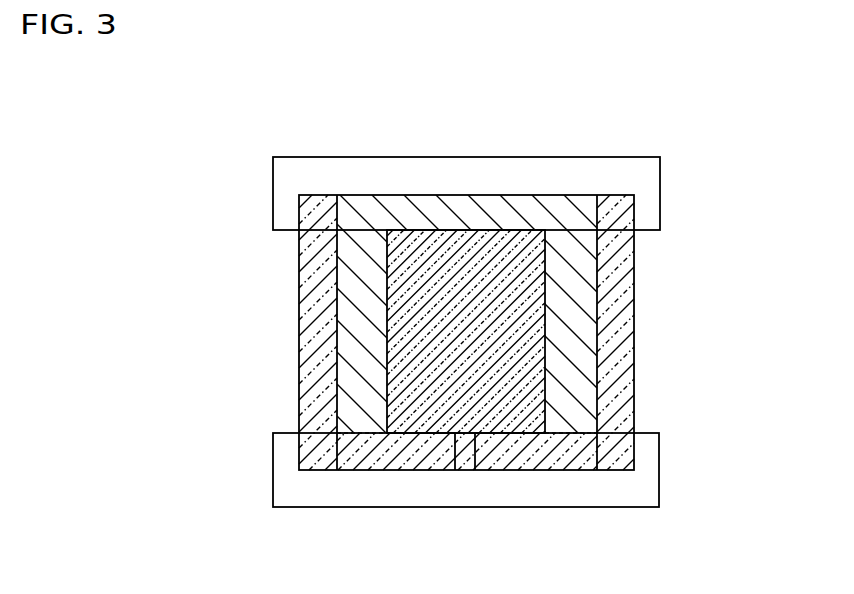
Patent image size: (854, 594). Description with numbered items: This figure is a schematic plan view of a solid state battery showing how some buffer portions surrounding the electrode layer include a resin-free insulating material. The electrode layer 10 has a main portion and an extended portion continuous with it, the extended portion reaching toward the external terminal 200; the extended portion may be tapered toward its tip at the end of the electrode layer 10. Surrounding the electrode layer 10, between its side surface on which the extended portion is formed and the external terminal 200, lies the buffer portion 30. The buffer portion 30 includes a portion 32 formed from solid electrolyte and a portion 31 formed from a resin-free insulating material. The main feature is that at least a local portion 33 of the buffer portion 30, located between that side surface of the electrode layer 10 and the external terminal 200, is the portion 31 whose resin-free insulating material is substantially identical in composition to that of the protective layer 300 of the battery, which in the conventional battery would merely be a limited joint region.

The external terminal 200 is at (478, 172).
The protective layer 300 is at (311, 274).
The buffer portion 30 is at (385, 384).
The portion formed from solid electrolyte 32 is at (346, 334).
The portion formed from resin-free insulating material 31 is at (347, 457).
The local portion of buffer portion 33 is at (393, 436).
The electrode layer 10 is at (595, 390).